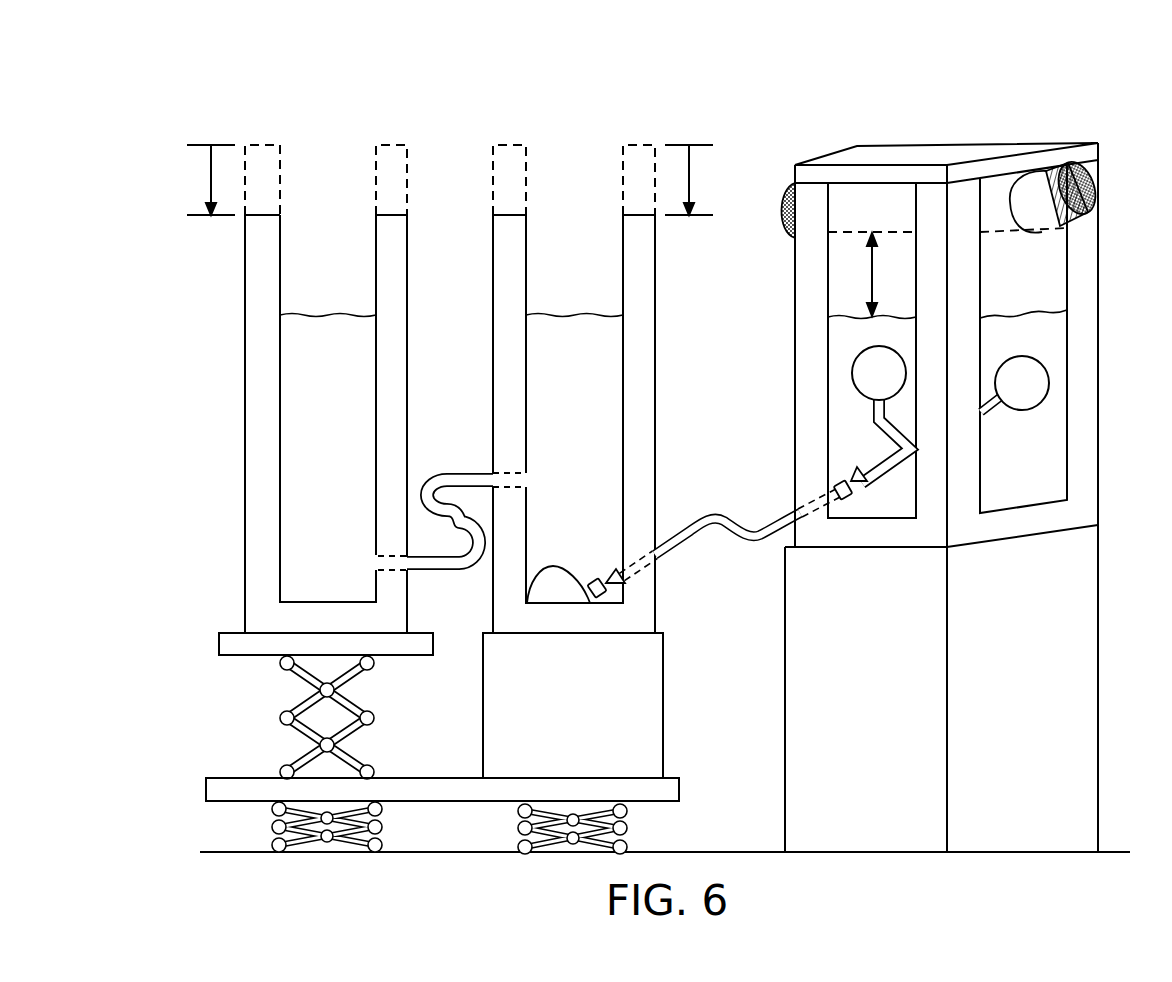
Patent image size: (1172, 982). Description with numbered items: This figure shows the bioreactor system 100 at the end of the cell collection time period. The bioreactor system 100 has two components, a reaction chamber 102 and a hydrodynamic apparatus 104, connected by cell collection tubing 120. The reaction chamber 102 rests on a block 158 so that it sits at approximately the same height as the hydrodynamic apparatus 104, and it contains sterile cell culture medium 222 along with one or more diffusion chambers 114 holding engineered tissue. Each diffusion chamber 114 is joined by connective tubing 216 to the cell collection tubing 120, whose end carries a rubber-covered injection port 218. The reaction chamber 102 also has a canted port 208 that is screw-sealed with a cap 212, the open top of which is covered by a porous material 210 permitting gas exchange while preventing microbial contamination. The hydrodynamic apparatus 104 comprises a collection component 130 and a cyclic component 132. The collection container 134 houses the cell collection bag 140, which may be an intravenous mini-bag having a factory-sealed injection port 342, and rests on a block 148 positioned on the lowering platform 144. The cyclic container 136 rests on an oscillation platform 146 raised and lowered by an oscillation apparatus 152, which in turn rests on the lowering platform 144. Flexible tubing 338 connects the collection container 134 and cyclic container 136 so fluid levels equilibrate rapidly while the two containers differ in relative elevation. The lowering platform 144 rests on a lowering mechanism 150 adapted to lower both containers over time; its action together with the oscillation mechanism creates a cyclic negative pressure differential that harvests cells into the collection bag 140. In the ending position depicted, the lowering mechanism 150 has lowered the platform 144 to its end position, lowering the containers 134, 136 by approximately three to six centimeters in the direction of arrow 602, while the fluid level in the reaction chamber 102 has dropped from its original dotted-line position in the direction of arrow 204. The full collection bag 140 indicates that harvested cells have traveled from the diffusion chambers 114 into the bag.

The bioreactor system 100 is at (774, 115).
The reaction chamber 102 is at (982, 122).
The hydrodynamic apparatus 104 is at (450, 150).
The diffusion chamber 114 is at (863, 378).
The cell collection tubing 120 is at (740, 535).
The collection component 130 is at (583, 134).
The cyclic component 132 is at (319, 132).
The collection container 134 is at (655, 350).
The cyclic container 136 is at (407, 355).
The cell collection bag 140 is at (548, 594).
The lowering platform 144 is at (228, 790).
The oscillation platform 146 is at (232, 641).
The block 148 is at (642, 717).
The lowering mechanism 150 is at (275, 827).
The oscillation apparatus 152 is at (283, 717).
The block 158 is at (1087, 625).
The arrow 204 is at (870, 285).
The canted port 208 is at (1025, 232).
The porous material 210 is at (778, 215).
The cap 212 is at (1075, 215).
The connective tubing 216 is at (883, 432).
The injection port 218 is at (848, 482).
The cell culture medium 222 is at (1045, 332).
The tubing 338 is at (450, 478).
The injection port 342 is at (601, 578).
The arrow 602 is at (208, 180).